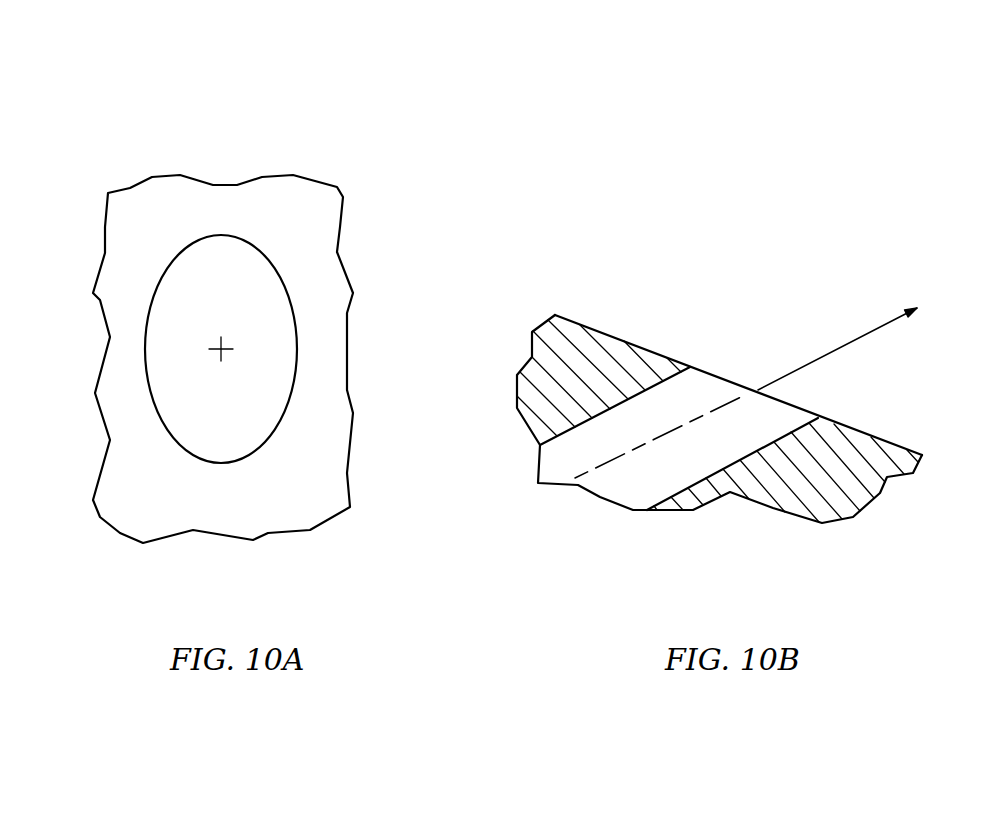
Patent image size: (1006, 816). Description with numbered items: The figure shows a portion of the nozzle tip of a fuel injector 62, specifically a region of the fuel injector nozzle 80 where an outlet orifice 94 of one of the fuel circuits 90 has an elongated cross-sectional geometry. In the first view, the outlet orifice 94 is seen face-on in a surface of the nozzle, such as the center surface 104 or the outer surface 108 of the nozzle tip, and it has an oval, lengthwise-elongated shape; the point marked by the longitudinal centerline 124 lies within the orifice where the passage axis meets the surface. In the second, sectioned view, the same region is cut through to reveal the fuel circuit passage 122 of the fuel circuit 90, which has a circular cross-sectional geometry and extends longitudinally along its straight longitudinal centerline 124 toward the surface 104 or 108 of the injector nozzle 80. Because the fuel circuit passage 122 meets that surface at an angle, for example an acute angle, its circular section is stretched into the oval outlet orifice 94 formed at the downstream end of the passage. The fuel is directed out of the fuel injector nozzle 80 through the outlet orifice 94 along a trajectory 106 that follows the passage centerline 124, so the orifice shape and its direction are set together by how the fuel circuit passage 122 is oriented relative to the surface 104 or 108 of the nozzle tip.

In FIG. 10A, the fuel injector 62 is at (231, 336).
In FIG. 10B, the fuel injector 62 is at (744, 371).
In FIG. 10A, the fuel injector nozzle 80 is at (231, 336).
In FIG. 10B, the fuel injector nozzle 80 is at (744, 371).
In FIG. 10A, the fuel circuit 90 is at (234, 378).
In FIG. 10B, the fuel circuit 90 is at (710, 429).
In FIG. 10A, the outlet orifice 94 is at (238, 435).
In FIG. 10B, the outlet orifice 94 is at (718, 376).
In FIG. 10A, the center surface 104 is at (223, 387).
In FIG. 10B, the center surface 104 is at (751, 419).
In FIG. 10A, the outer surface 108 is at (175, 520).
In FIG. 10B, the outer surface 108 is at (935, 395).
In FIG. 10B, the trajectory 106 is at (815, 360).
In FIG. 10B, the fuel circuit passage 122 is at (753, 462).
In FIG. 10A, the longitudinal centerline 124 is at (215, 350).
In FIG. 10B, the longitudinal centerline 124 is at (620, 467).